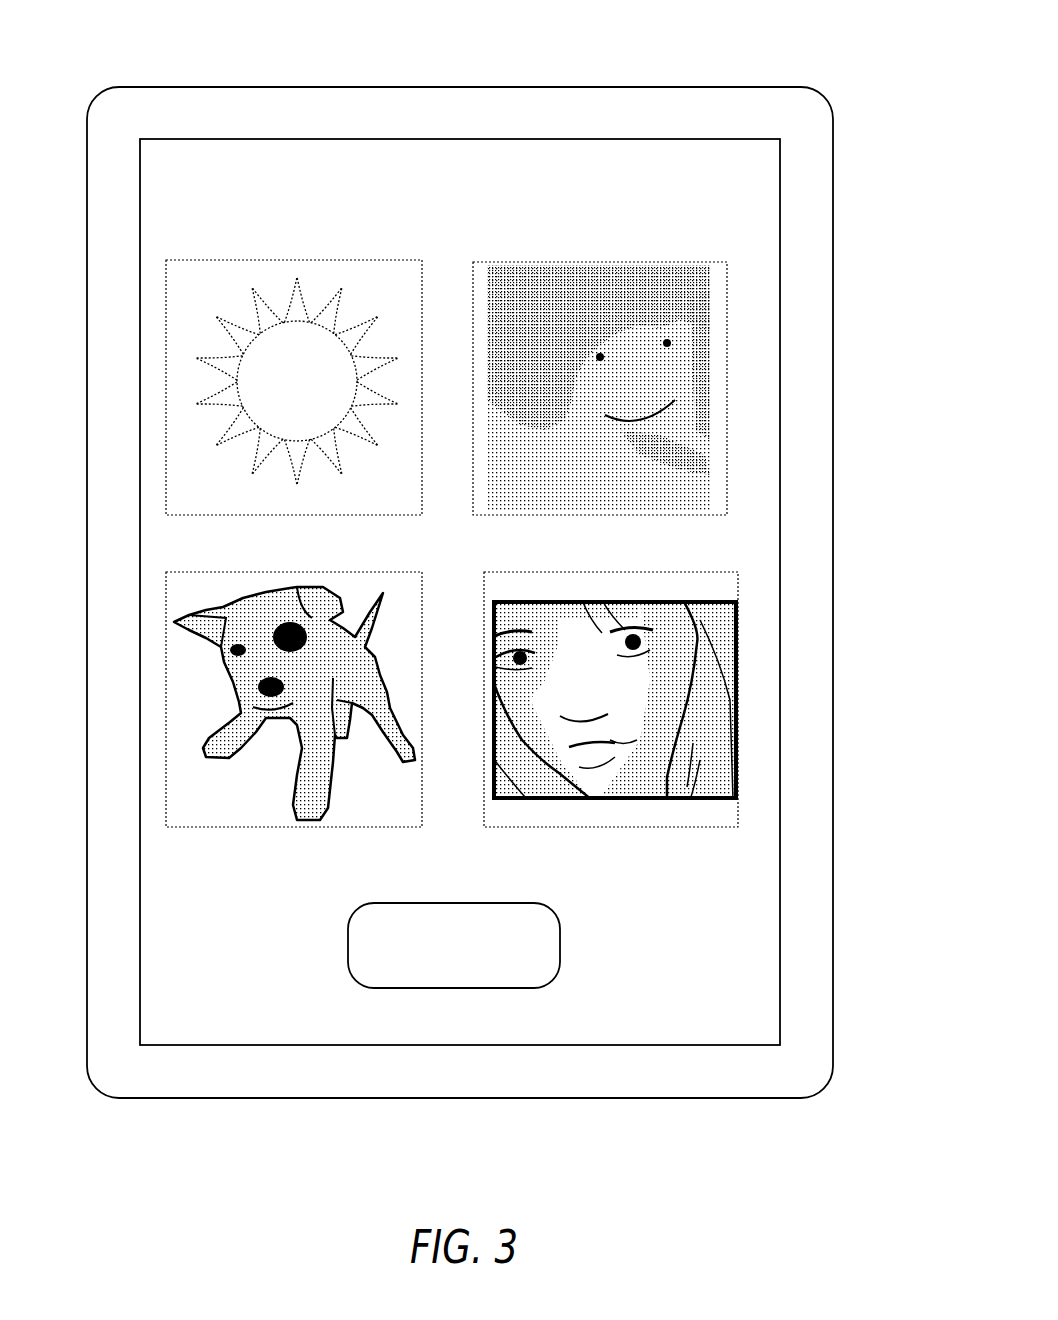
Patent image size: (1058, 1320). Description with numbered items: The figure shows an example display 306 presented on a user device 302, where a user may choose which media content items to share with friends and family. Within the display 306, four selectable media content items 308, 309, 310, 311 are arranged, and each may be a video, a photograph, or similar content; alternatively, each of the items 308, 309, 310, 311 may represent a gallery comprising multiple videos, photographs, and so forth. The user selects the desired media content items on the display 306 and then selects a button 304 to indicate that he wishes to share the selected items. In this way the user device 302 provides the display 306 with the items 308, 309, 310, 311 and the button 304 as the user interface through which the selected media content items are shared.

The user device 302 is at (128, 87).
The button 304 is at (560, 920).
The display 306 is at (693, 139).
The media content item 308 is at (167, 440).
The media content item 309 is at (167, 690).
The media content item 310 is at (725, 388).
The media content item 311 is at (737, 700).